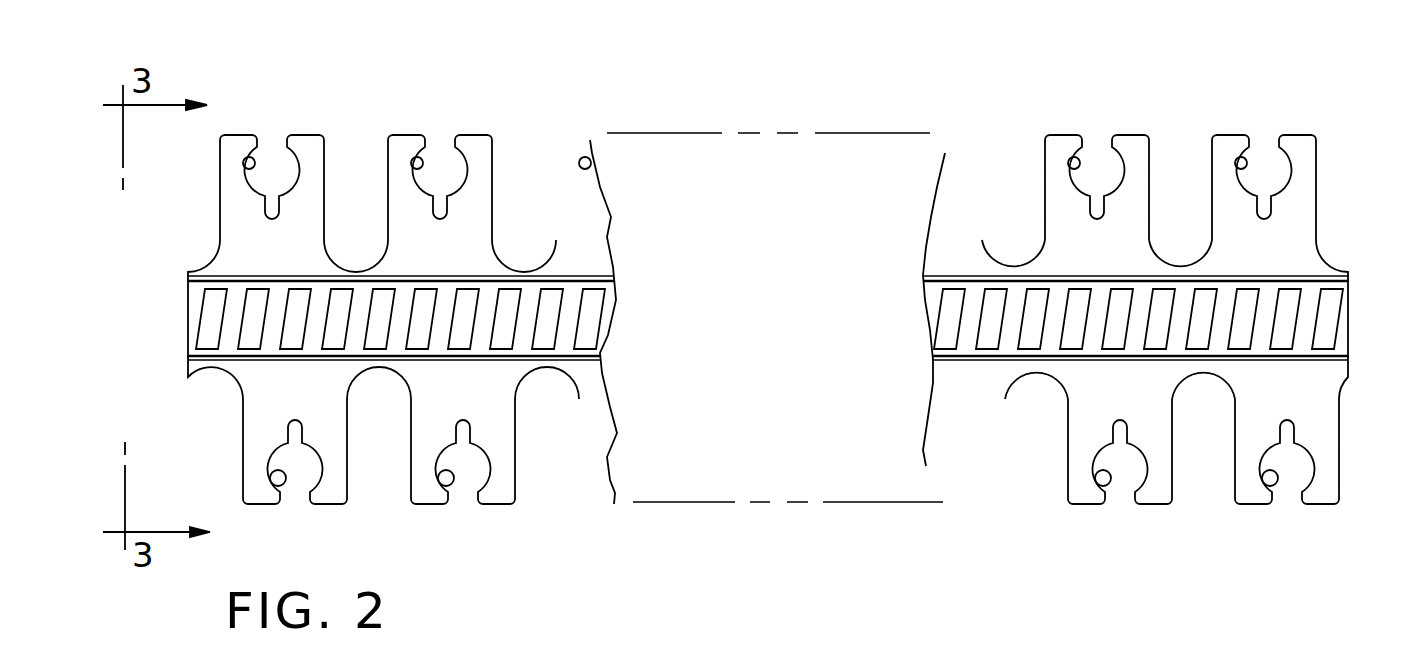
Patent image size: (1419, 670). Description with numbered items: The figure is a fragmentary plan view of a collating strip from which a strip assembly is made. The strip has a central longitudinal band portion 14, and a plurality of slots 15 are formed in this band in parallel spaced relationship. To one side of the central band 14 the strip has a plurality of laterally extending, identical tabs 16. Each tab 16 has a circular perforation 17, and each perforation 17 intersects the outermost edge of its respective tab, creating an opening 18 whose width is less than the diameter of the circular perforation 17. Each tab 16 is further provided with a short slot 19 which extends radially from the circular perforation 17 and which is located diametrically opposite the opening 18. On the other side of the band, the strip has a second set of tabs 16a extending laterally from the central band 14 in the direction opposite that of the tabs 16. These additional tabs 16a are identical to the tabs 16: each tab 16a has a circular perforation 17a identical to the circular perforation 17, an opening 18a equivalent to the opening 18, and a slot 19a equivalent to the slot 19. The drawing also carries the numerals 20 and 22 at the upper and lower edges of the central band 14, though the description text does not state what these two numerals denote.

The central longitudinal band portion 14 is at (1345, 332).
The slots 15 is at (222, 320).
The tabs 16 is at (303, 238).
The tabs 16a is at (265, 396).
The circular perforation 17 is at (247, 168).
The circular perforation 17a is at (275, 484).
The opening 18 is at (287, 135).
The opening 18a is at (281, 504).
The short slot 19 is at (263, 200).
The slot 19a is at (292, 424).
The upper edge of strip 20 is at (186, 275).
The lower edge of strip 22 is at (187, 358).